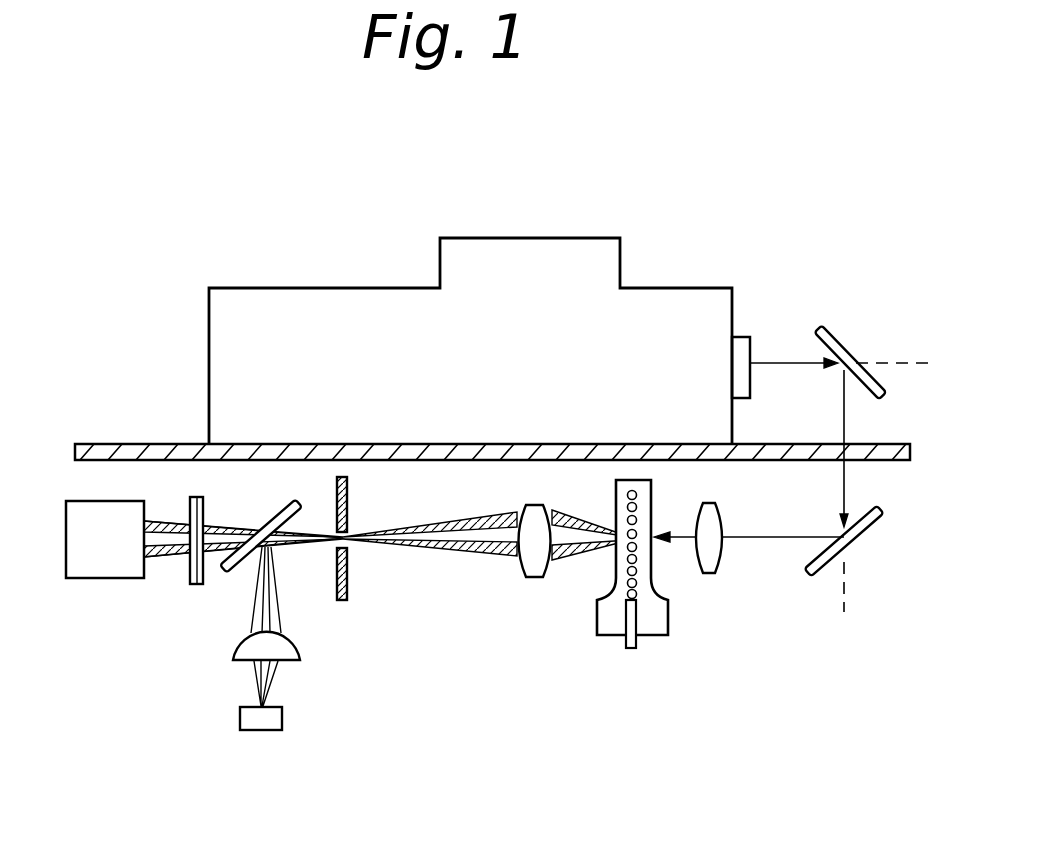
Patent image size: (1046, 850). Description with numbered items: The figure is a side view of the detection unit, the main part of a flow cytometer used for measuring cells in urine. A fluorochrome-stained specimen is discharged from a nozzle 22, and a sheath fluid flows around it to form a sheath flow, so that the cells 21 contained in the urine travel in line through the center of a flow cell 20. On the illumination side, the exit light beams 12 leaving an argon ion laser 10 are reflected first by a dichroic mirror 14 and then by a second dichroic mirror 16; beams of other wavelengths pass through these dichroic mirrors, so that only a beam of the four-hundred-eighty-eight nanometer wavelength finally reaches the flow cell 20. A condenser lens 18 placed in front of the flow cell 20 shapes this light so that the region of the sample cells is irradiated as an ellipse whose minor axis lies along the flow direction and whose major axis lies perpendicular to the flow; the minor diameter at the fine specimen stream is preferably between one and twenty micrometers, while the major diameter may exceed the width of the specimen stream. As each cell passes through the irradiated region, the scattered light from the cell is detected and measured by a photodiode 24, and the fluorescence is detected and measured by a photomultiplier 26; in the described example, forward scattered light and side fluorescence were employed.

The argon ion laser 10 is at (678, 288).
The exit light beams 12 is at (770, 363).
The dichroic mirror 14 is at (840, 336).
The dichroic mirror 16 is at (878, 520).
The condenser lens 18 is at (722, 568).
The flow cell 20 is at (652, 555).
The cells 21 is at (616, 558).
The nozzle 22 is at (638, 645).
The photodiode 24 is at (282, 716).
The photomultiplier 26 is at (108, 578).